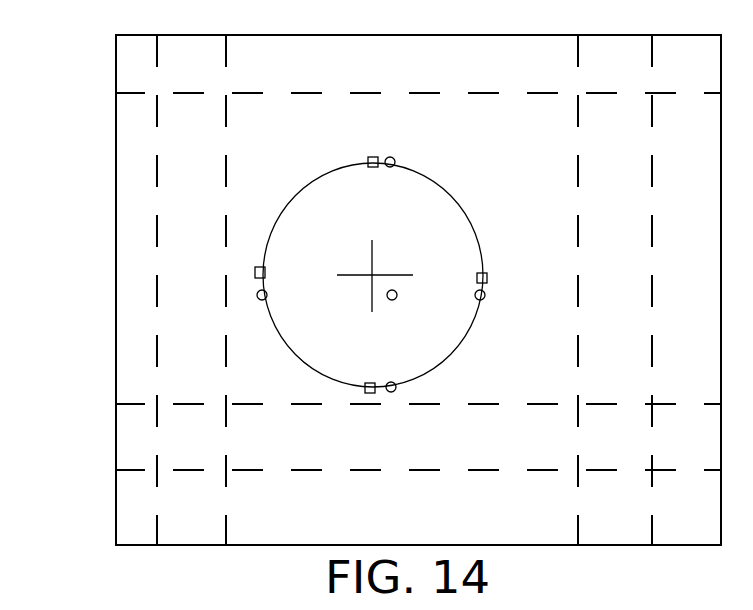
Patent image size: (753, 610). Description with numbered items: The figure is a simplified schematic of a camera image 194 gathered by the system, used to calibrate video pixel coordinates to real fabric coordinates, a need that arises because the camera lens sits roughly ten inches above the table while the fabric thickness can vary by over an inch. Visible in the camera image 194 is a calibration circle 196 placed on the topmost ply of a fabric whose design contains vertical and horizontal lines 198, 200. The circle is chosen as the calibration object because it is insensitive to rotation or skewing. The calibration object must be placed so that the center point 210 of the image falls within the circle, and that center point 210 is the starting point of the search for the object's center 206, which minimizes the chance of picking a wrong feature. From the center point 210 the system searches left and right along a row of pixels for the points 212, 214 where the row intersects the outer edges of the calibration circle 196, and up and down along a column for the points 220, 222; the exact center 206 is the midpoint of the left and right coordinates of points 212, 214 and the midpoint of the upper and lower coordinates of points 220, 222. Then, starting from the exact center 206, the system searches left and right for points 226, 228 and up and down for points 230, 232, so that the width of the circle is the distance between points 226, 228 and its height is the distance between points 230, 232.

The camera image 194 is at (94, 165).
The calibration circle 196 is at (463, 212).
The vertical lines 198 is at (313, 95).
The horizontal lines 200 is at (228, 52).
The object center 206 is at (366, 263).
The center point of the image 210 is at (396, 299).
The left intersection point 212 is at (257, 298).
The right intersection point 214 is at (485, 298).
The lower intersection point 220 is at (397, 388).
The upper intersection point 222 is at (392, 157).
The left width point 226 is at (256, 266).
The right width point 228 is at (487, 275).
The lower height point 230 is at (370, 393).
The upper height point 232 is at (368, 161).